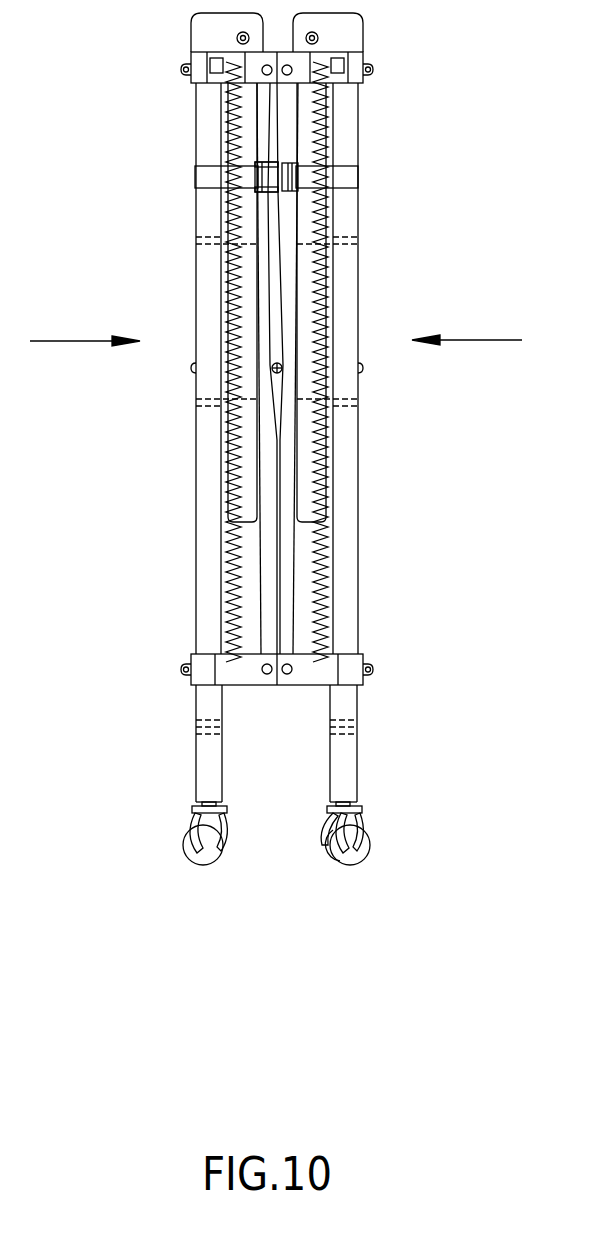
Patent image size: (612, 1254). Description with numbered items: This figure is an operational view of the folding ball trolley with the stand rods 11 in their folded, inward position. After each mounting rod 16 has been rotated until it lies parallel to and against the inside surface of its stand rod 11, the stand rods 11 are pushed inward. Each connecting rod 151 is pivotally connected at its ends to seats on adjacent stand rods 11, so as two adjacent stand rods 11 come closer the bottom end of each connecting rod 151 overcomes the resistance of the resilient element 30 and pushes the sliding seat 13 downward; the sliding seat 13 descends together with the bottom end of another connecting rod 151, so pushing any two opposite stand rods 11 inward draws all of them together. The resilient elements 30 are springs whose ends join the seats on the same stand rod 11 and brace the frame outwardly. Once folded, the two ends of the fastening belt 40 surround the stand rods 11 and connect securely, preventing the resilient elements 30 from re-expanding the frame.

The stand rod 11 is at (203, 530).
The sliding seat 13 is at (357, 675).
The mounting rod 16 is at (240, 420).
The resilient element 30 is at (223, 233).
The fastening belt 40 is at (307, 160).
The connecting rod 151 is at (283, 620).